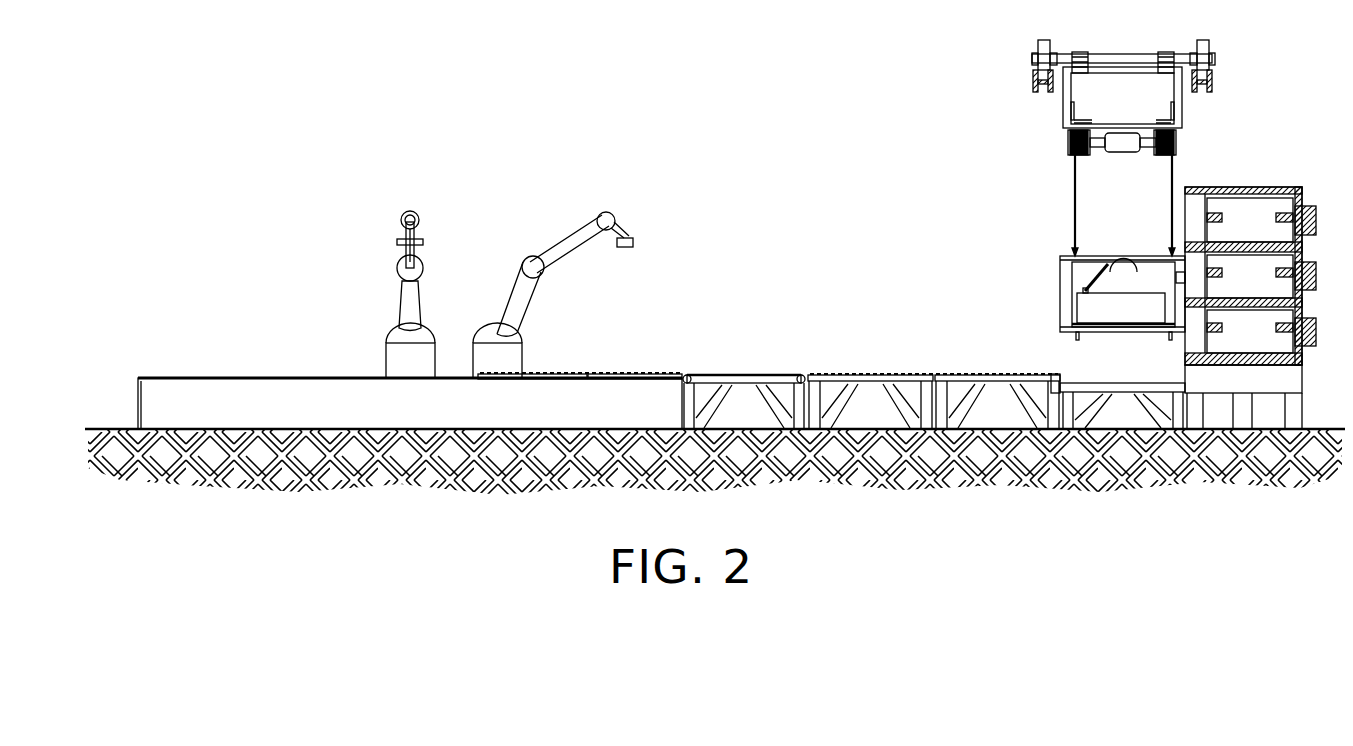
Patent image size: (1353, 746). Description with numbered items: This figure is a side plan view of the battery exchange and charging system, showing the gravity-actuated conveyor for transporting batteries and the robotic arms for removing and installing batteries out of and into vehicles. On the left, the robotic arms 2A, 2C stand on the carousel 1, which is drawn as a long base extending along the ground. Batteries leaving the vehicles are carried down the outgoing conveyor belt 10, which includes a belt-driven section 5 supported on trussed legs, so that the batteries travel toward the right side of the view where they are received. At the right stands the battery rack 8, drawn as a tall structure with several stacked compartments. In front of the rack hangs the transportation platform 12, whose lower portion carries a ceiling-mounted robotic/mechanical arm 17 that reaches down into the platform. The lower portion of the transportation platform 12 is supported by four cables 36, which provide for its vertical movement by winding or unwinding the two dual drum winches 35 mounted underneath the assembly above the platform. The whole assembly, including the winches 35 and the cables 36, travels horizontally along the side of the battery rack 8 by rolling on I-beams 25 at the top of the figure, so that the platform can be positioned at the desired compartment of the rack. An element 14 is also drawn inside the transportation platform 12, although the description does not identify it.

The carousel 1 is at (300, 378).
The robotic arm 2A is at (390, 340).
The robotic arm 2C is at (520, 336).
The belt-driven section 5 is at (760, 373).
The battery rack 8 is at (1290, 187).
The outgoing conveyor belt 10 is at (888, 373).
The transportation platform 12 is at (1060, 277).
The tray 14 is at (1082, 290).
The ceiling-mounted robotic/mechanical arm 17 is at (1102, 262).
The I-beams 25 is at (1033, 84).
The dual drum winches 35 is at (1070, 142).
The cables 36 is at (1074, 204).